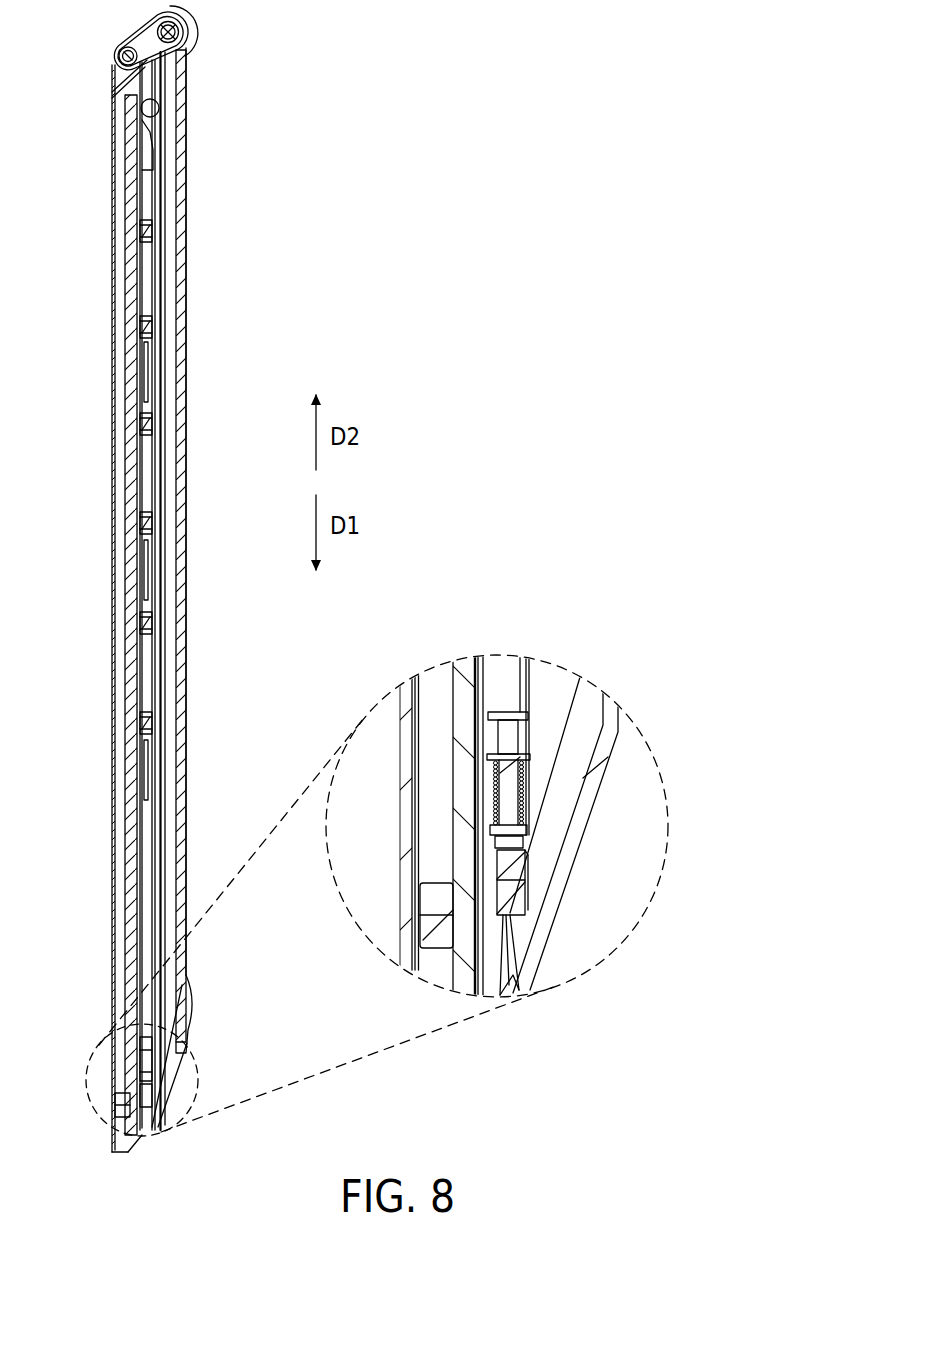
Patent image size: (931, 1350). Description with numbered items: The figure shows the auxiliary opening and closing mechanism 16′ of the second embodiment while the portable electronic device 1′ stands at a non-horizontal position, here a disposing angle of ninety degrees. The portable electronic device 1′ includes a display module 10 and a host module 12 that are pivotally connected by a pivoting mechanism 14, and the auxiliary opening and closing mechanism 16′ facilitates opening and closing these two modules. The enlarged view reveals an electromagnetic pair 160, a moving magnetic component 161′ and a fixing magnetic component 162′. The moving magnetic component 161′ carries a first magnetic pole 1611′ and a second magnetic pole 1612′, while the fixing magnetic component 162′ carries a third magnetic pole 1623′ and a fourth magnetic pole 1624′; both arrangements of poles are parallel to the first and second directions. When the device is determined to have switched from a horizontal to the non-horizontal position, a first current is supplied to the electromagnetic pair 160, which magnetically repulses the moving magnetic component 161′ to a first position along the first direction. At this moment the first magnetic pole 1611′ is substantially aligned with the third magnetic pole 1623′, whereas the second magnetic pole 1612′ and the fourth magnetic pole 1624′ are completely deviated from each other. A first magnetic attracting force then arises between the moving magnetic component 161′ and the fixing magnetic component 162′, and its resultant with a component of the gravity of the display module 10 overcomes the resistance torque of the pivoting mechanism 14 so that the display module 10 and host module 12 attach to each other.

The portable electronic device 1′ is at (507, 172).
The display module 10 is at (108, 186).
The host module 12 is at (185, 208).
The pivoting mechanism 14 is at (184, 27).
The auxiliary opening and closing mechanism 16′ is at (479, 845).
The electromagnetic pair 160 is at (523, 807).
The moving magnetic component 161′ is at (628, 843).
The first magnetic pole 1611′ is at (518, 893).
The second magnetic pole 1612′ is at (524, 867).
The fixing magnetic component 162′ is at (325, 966).
The third magnetic pole 1623′ is at (440, 900).
The fourth magnetic pole 1624′ is at (445, 933).